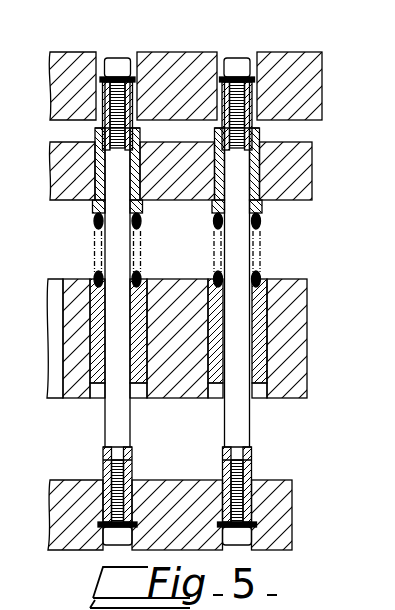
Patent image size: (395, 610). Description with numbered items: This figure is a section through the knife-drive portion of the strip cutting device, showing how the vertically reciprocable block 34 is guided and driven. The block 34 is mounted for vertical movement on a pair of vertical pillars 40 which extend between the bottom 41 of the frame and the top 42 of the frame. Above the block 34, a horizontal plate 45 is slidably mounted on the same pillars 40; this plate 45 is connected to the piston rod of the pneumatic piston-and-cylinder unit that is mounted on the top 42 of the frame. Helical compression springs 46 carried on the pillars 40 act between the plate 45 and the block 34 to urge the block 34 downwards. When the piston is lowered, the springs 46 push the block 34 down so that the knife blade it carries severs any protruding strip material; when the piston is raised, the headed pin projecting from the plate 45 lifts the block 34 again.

The vertically reciprocable block 34 is at (297, 337).
The vertical pillars 40 is at (226, 421).
The bottom of the frame 41 is at (281, 508).
The top of the frame 42 is at (182, 62).
The horizontal plate 45 is at (293, 172).
The helical compression springs 46 is at (211, 228).